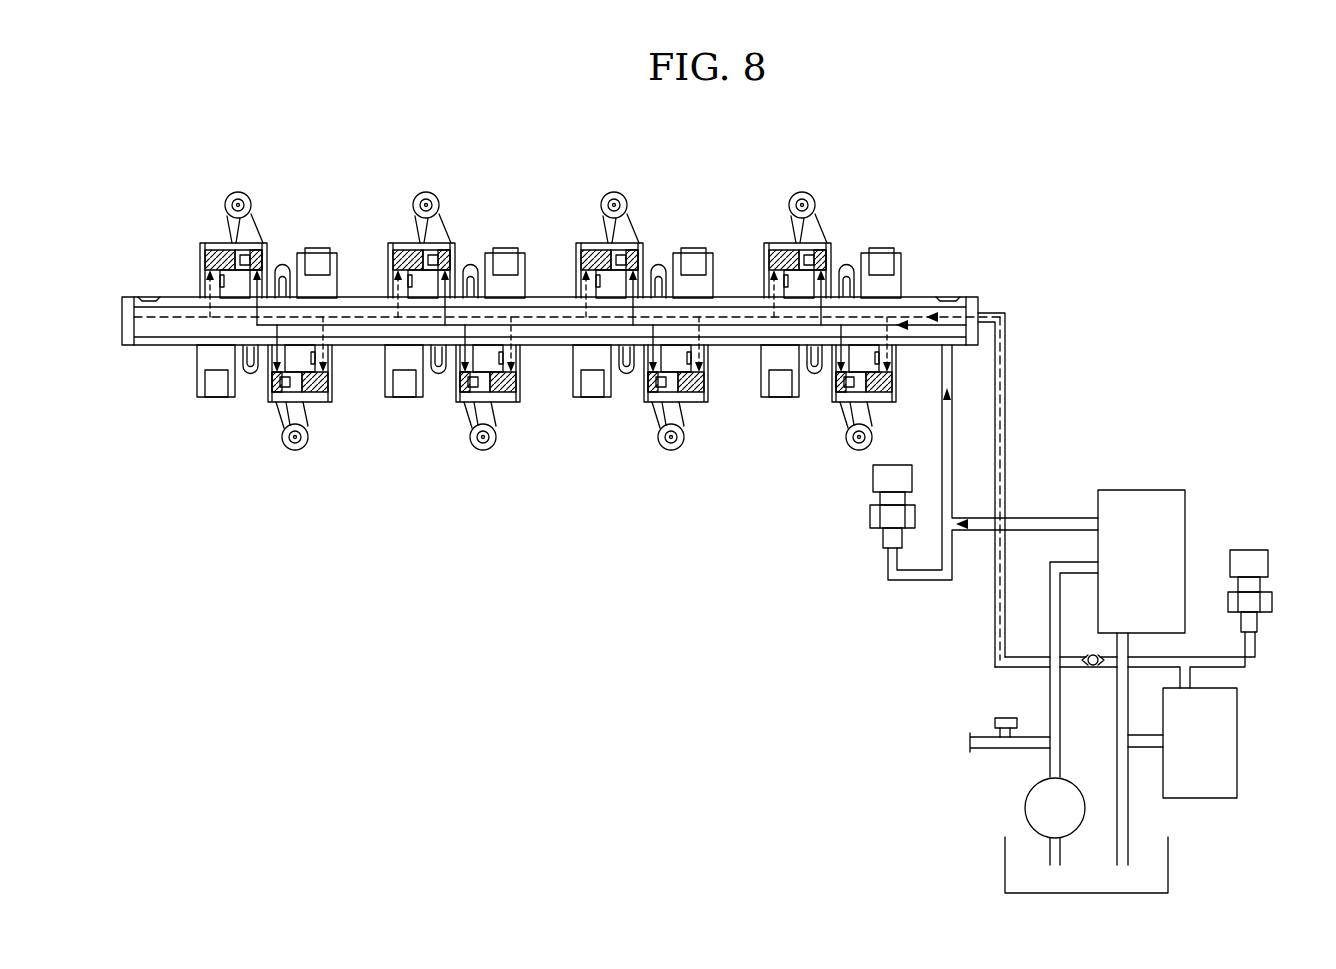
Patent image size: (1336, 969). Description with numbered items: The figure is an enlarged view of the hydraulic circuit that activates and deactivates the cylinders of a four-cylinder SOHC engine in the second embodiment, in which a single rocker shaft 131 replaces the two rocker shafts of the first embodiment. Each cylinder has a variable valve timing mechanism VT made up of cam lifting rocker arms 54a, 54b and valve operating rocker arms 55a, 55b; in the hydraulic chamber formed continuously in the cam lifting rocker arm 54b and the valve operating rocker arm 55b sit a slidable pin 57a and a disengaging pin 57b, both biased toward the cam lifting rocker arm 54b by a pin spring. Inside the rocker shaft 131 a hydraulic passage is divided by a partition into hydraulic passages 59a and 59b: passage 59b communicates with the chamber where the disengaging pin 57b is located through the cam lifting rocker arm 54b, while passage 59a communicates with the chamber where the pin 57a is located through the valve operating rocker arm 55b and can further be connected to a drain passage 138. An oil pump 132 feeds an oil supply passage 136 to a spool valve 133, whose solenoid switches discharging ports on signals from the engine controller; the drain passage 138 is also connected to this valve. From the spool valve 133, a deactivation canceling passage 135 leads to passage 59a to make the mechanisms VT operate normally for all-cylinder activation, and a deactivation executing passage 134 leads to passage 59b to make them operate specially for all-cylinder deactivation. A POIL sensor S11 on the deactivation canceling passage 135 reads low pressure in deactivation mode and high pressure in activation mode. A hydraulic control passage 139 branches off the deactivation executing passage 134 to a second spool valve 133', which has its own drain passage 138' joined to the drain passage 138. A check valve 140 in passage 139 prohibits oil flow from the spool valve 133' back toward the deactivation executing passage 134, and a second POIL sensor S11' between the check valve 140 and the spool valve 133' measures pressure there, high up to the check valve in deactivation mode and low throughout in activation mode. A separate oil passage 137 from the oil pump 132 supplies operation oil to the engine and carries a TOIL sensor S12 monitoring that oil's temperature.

The rocker shaft 131 is at (950, 297).
The hydraulic passage 59a is at (935, 330).
The hydraulic passage 59b is at (905, 317).
The cam lifting rocker arm 54a is at (333, 395).
The cam lifting rocker arm 54b is at (200, 262).
The valve operating rocker arm 55a is at (272, 420).
The valve operating rocker arm 55b is at (258, 225).
The pin 57a is at (236, 243).
The disengaging pin 57b is at (207, 246).
The variable valve timing mechanism VT is at (246, 193).
The deactivation executing passage 134 is at (1006, 390).
The deactivation canceling passage 135 is at (953, 460).
The oil supply passage 136 is at (1062, 735).
The oil passage 137 is at (1000, 748).
The drain passage 138 is at (1222, 749).
The drain passage 138' is at (1157, 786).
The hydraulic control passage 139 is at (1022, 676).
The check valve 140 is at (1093, 668).
The oil pump 132 is at (1025, 808).
The spool valve 133 is at (1146, 528).
The spool valve 133' is at (1211, 781).
The POIL sensor S11 is at (855, 506).
The POIL sensor S11' is at (1256, 553).
The TOIL sensor S12 is at (995, 723).